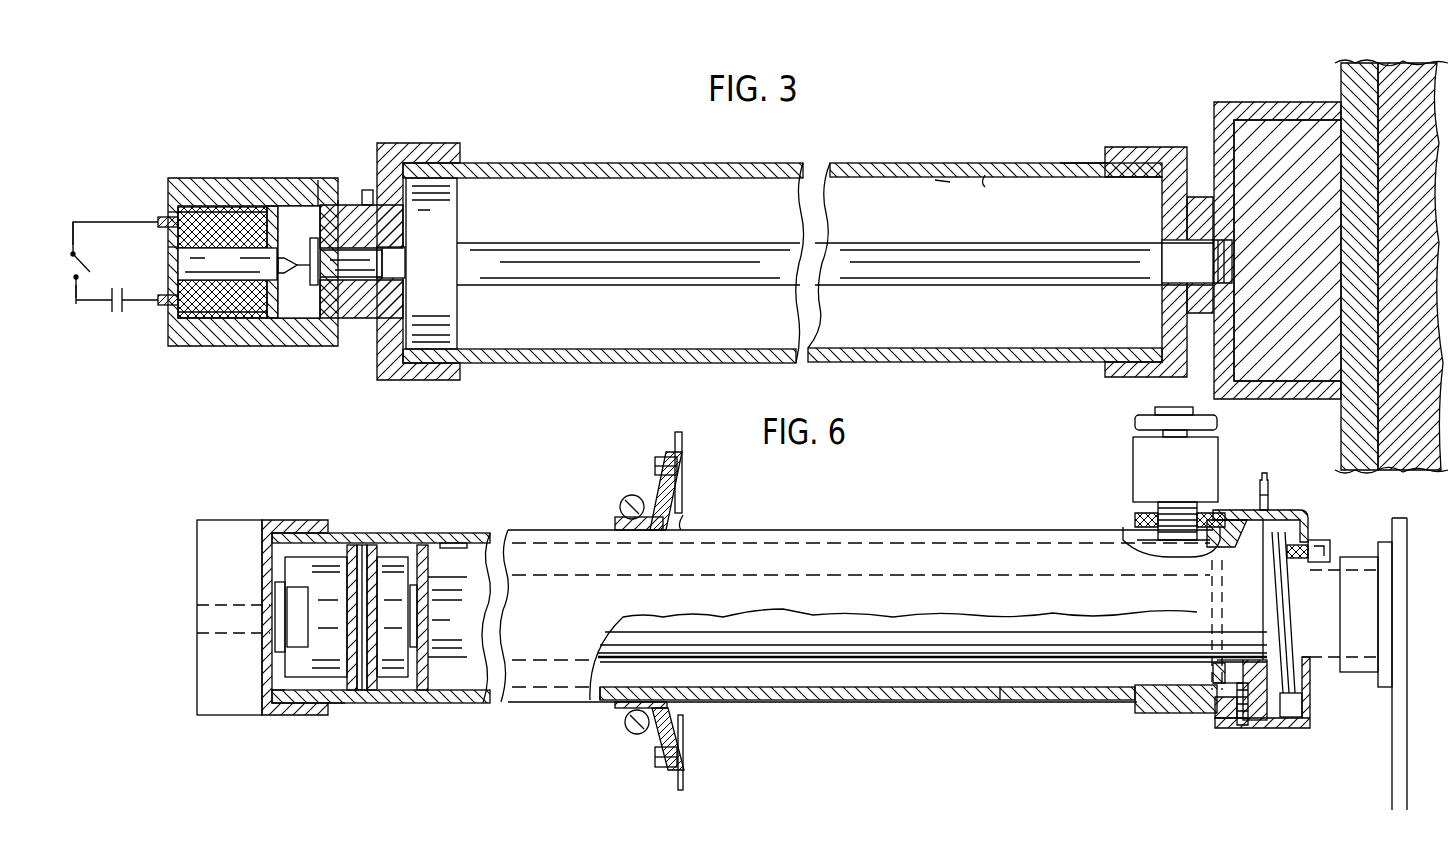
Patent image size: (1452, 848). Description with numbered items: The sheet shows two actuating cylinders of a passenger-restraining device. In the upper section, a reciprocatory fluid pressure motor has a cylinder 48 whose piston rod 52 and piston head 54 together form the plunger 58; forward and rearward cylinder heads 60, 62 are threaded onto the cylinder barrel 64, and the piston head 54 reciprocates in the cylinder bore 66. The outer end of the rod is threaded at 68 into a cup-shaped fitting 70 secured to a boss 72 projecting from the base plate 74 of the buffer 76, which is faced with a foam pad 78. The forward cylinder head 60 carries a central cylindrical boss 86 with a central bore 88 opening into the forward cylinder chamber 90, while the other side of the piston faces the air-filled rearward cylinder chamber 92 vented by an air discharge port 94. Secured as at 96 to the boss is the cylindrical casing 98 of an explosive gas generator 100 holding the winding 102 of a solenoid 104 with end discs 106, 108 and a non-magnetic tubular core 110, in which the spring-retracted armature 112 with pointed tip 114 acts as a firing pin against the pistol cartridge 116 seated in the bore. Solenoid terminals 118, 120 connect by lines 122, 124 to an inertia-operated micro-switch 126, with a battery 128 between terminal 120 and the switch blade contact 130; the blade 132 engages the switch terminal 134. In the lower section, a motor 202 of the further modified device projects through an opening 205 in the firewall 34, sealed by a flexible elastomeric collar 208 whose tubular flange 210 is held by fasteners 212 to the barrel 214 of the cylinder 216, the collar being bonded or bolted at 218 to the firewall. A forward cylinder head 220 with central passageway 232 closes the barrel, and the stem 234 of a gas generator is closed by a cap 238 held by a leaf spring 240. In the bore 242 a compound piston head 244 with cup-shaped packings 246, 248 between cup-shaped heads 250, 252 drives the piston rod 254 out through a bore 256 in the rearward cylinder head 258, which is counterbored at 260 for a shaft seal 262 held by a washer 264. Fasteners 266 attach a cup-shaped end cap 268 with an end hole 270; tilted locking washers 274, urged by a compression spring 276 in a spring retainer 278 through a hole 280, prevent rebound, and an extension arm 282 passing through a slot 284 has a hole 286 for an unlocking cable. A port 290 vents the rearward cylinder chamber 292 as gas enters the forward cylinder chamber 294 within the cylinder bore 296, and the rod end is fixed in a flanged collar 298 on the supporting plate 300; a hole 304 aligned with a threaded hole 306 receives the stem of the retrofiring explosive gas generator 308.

In FIG. 6, the firewall or bulkhead 34 is at (682, 437).
In FIG. 3, the cylinder 48 is at (880, 162).
In FIG. 3, the piston rod 52 is at (676, 261).
In FIG. 3, the piston head 54 is at (457, 220).
In FIG. 3, the plunger 58 is at (1106, 242).
In FIG. 3, the forward cylinder head 60 is at (410, 146).
In FIG. 3, the rearward cylinder head 62 is at (1130, 147).
In FIG. 3, the cylinder barrel 64 is at (604, 164).
In FIG. 3, the cylinder bore 66 is at (985, 178).
In FIG. 3, the threaded end of piston rod 68 is at (1210, 262).
In FIG. 3, the cup-shaped fitting 70 is at (1228, 103).
In FIG. 3, the boss 72 is at (1300, 140).
In FIG. 3, the base plate 74 is at (1350, 64).
In FIG. 3, the passenger-restraining buffer 76 is at (1380, 60).
In FIG. 3, the foam pad 78 is at (1415, 76).
In FIG. 3, the central cylindrical boss 86 is at (357, 205).
In FIG. 3, the central bore 88 is at (392, 271).
In FIG. 3, the forward cylinder chamber 90 is at (401, 255).
In FIG. 3, the rearward cylinder chamber 92 is at (942, 181).
In FIG. 3, the air discharge port 94 is at (1077, 172).
In FIG. 3, the threaded connection 96 is at (320, 205).
In FIG. 3, the cylindrical casing 98 is at (278, 181).
In FIG. 3, the explosive gas generator 100 is at (168, 205).
In FIG. 3, the winding 102 is at (209, 185).
In FIG. 3, the solenoid 104 is at (166, 211).
In FIG. 3, the end disc 106 is at (176, 247).
In FIG. 3, the end disc 108 is at (309, 210).
In FIG. 3, the tubular core 110 is at (227, 262).
In FIG. 3, the armature 112 is at (286, 276).
In FIG. 3, the pointed tip 114 is at (306, 264).
In FIG. 3, the pistol cartridge 116 is at (350, 236).
In FIG. 3, the solenoid terminal 118 is at (156, 222).
In FIG. 3, the solenoid terminal 120 is at (166, 307).
In FIG. 3, the line 122 is at (86, 228).
In FIG. 3, the line 124 is at (76, 306).
In FIG. 3, the inertia-operated micro-switch 126 is at (110, 268).
In FIG. 3, the battery 128 is at (118, 312).
In FIG. 3, the switch blade contact 130 is at (102, 300).
In FIG. 3, the blade 132 is at (70, 278).
In FIG. 3, the switch terminal 134 is at (74, 254).
In FIG. 6, the reciprocating fluid pressure motor 202 is at (984, 527).
In FIG. 6, the opening 205 is at (685, 520).
In FIG. 6, the flexible elastomeric collar 208 is at (660, 490).
In FIG. 6, the tubular flange 210 is at (620, 512).
In FIG. 6, the fastener 212 is at (615, 520).
In FIG. 6, the cylinder barrel 214 is at (398, 533).
In FIG. 6, the cylinder 216 is at (790, 527).
In FIG. 6, the bonding or bolting 218 is at (660, 462).
In FIG. 6, the forward cylinder head 220 is at (256, 520).
In FIG. 6, the central bore or passageway 232 is at (262, 600).
In FIG. 6, the stem 234 is at (1185, 547).
In FIG. 6, the cap 238 is at (1134, 421).
In FIG. 6, the leaf spring 240 is at (1166, 408).
In FIG. 6, the bore 242 is at (458, 544).
In FIG. 6, the compound piston head 244 is at (363, 703).
In FIG. 6, the cup-shaped packing 246 is at (336, 703).
In FIG. 6, the cup-shaped packing 248 is at (420, 703).
In FIG. 6, the cup-shaped head 250 is at (300, 661).
In FIG. 6, the cup-shaped head 252 is at (384, 612).
In FIG. 6, the piston rod 254 is at (994, 662).
In FIG. 6, the bore 256 is at (1250, 727).
In FIG. 6, the rearward cylinder head 258 is at (1132, 521).
In FIG. 6, the counterbore 260 is at (1244, 660).
In FIG. 6, the shaft seal 262 is at (1212, 661).
In FIG. 6, the washer 264 is at (1212, 672).
In FIG. 6, the fastener 266 is at (1240, 728).
In FIG. 6, the cup-shaped end cap 268 is at (1292, 728).
In FIG. 6, the end hole 270 is at (1310, 657).
In FIG. 6, the piston-rod-locking washer 274 is at (1292, 615).
In FIG. 6, the compression spring 276 is at (1312, 515).
In FIG. 6, the spring retainer 278 is at (1330, 544).
In FIG. 6, the hole 280 is at (1300, 573).
In FIG. 6, the extension arm 282 is at (1264, 472).
In FIG. 6, the slot 284 is at (1280, 510).
In FIG. 6, the hole 286 is at (1270, 490).
In FIG. 6, the port 290 is at (1130, 713).
In FIG. 6, the rearward cylinder chamber 292 is at (1058, 700).
In FIG. 6, the forward cylinder chamber 294 is at (282, 682).
In FIG. 6, the cylinder bore 296 is at (800, 700).
In FIG. 6, the flanged collar 298 is at (1376, 686).
In FIG. 6, the supporting plate 300 is at (1392, 779).
In FIG. 6, the hole 304 is at (1150, 538).
In FIG. 6, the threaded hole 306 is at (1160, 549).
In FIG. 6, the retrofiring explosive gas generator 308 is at (1131, 465).